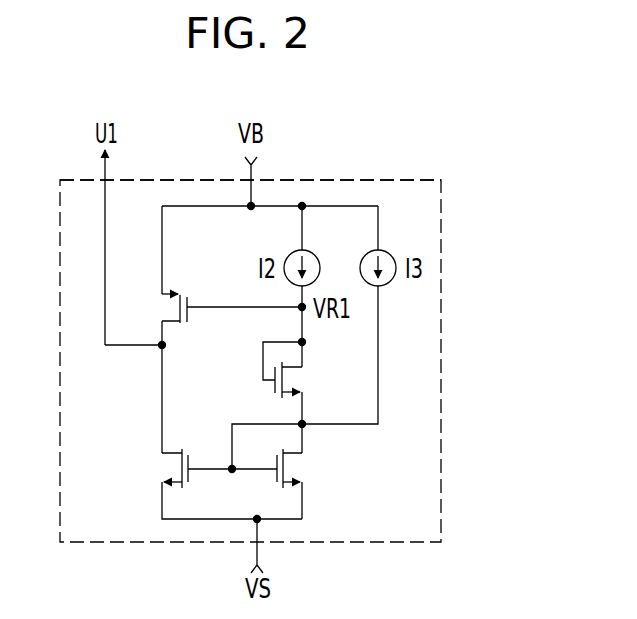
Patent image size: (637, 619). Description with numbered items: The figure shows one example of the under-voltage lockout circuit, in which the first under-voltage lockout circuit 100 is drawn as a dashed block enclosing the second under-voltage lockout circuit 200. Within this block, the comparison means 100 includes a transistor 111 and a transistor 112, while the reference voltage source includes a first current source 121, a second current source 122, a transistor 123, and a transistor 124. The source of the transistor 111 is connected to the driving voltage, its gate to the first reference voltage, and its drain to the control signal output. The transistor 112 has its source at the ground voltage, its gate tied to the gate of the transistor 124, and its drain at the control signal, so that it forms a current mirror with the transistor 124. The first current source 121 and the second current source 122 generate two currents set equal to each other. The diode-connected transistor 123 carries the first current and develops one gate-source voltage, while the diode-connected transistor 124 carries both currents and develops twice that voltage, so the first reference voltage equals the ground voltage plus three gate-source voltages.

The first under-voltage lockout circuit 100 is at (441, 295).
The second under-voltage lockout circuit 200 is at (347, 180).
The transistor 111 is at (175, 306).
The transistor 112 is at (170, 470).
The first current source 121 is at (316, 259).
The second current source 122 is at (392, 259).
The transistor 123 is at (297, 380).
The transistor 124 is at (297, 470).